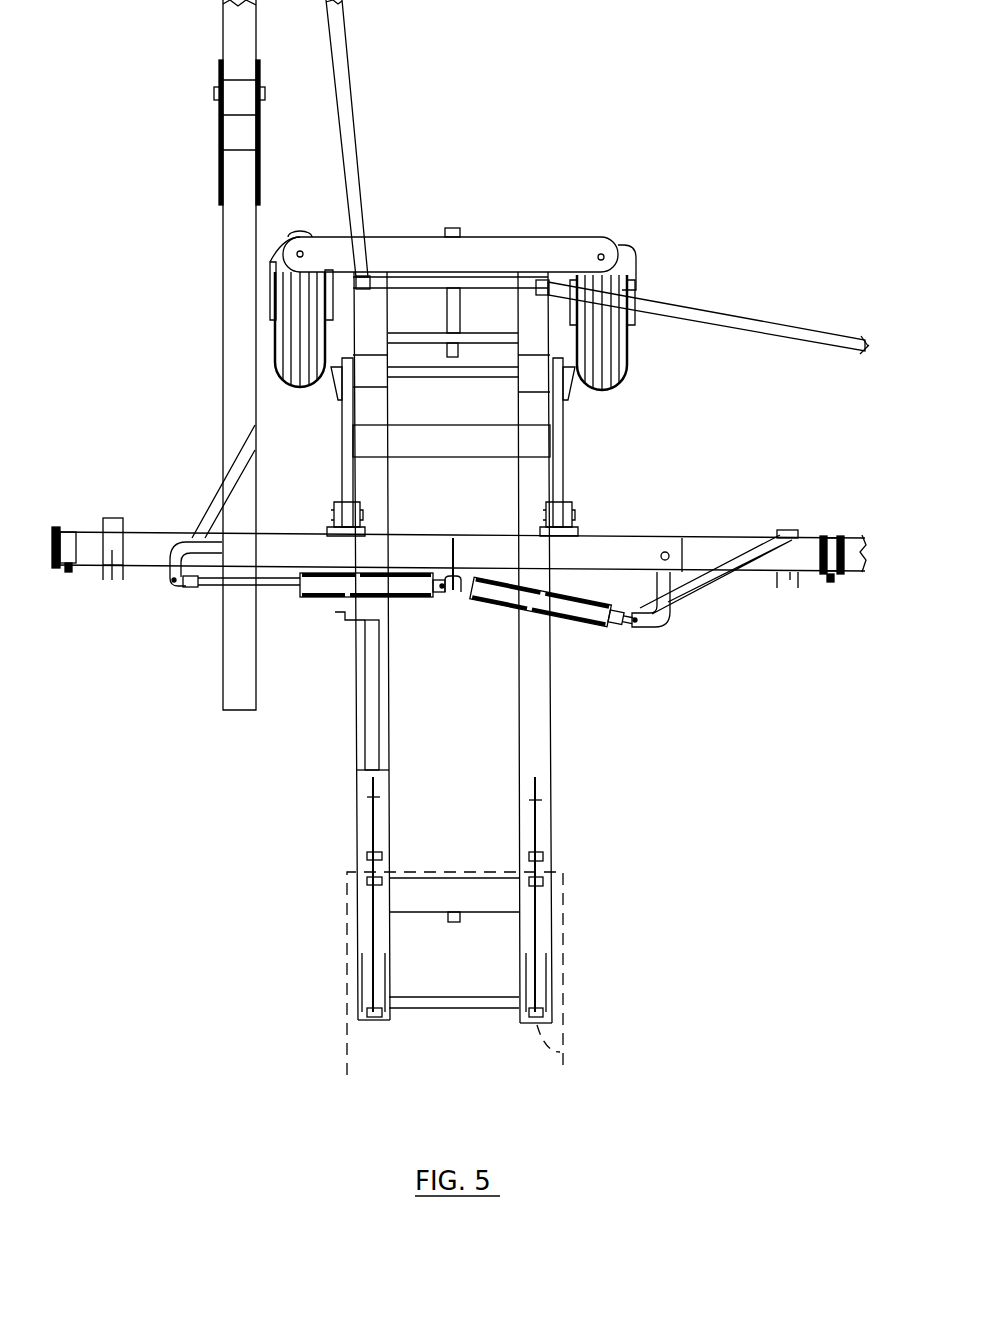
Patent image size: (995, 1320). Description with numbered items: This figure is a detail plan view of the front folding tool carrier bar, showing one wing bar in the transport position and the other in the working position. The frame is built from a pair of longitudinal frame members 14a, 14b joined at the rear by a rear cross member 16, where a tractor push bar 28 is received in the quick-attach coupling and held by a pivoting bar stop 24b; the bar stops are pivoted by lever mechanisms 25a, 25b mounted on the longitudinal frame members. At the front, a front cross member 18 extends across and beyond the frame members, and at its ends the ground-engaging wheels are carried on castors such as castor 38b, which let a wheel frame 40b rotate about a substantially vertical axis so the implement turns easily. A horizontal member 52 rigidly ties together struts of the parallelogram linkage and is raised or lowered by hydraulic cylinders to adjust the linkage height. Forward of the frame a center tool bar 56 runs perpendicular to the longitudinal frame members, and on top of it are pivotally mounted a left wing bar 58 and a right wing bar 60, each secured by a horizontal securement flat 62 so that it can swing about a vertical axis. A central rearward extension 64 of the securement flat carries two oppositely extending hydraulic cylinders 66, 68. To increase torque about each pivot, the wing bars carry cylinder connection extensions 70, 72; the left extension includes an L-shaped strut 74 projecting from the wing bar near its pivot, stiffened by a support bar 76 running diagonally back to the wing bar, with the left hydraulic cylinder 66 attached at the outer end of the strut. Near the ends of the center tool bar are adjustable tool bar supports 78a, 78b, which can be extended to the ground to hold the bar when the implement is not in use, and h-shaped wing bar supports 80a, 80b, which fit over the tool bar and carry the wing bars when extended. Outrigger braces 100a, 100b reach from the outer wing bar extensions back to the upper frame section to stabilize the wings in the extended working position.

The longitudinal frame member 14a is at (357, 752).
The longitudinal frame member 14b is at (552, 732).
The rear cross member 16 is at (468, 898).
The front cross member 18 is at (488, 258).
The bar stop 24b is at (562, 1053).
The lever mechanism 25a is at (372, 907).
The lever mechanism 25b is at (540, 830).
The push bar 28 is at (470, 1012).
The castor 38b is at (627, 252).
The wheel frame 40b is at (633, 283).
The horizontal member 52 is at (522, 443).
The center tool bar 56 is at (147, 538).
The left wing bar 58 is at (230, 309).
The right wing bar 60 is at (807, 563).
The horizontal securement flat 62 is at (608, 548).
The central rearward extension 64 is at (447, 592).
The left hydraulic cylinder 66 is at (307, 593).
The right hydraulic cylinder 68 is at (572, 620).
The cylinder connection extension 70 is at (195, 575).
The cylinder connection extension 72 is at (645, 597).
The L-shaped strut 74 is at (172, 570).
The support bar 76 is at (215, 508).
The adjustable tool bar support 78a is at (63, 577).
The adjustable tool bar support 78b is at (830, 583).
The wing bar support 80a is at (113, 565).
The wing bar support 80b is at (780, 537).
The outrigger brace 100a is at (355, 113).
The outrigger brace 100b is at (715, 317).